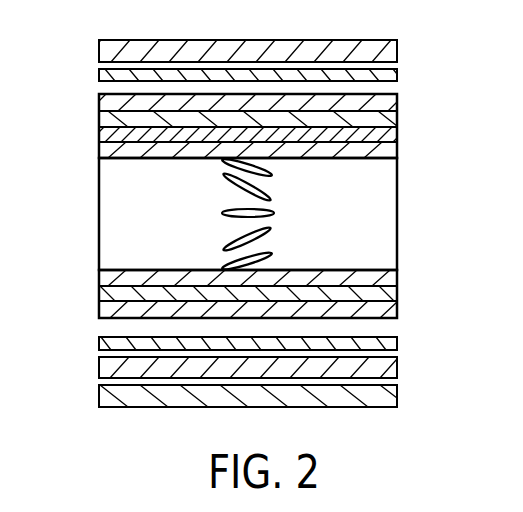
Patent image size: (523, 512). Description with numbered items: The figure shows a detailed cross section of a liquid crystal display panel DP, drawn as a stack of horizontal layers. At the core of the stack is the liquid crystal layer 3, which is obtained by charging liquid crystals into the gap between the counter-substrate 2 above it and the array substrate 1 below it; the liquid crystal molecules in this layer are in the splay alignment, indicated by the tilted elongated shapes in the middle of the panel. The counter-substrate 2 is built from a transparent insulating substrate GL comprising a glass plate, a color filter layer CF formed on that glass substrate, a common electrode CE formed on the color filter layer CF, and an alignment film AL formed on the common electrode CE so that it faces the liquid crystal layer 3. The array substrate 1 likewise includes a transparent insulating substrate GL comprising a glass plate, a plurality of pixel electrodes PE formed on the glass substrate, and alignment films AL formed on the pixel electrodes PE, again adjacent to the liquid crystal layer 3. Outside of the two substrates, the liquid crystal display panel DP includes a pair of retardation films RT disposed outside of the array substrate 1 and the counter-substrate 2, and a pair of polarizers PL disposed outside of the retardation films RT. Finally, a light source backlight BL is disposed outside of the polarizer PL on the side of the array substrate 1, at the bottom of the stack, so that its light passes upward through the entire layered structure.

The liquid crystal display panel DP is at (80, 40).
The polarizer PL is at (397, 51).
The retardation film RT is at (397, 76).
The transparent insulating substrate GL is at (397, 101).
The color filter layer CF is at (397, 118).
The common electrode CE is at (283, 144).
The alignment film AL is at (397, 150).
The counter-substrate 2 is at (307, 132).
The liquid crystal layer 3 is at (400, 212).
The array substrate 1 is at (307, 294).
The pixel electrode PE is at (282, 294).
The backlight BL is at (397, 395).